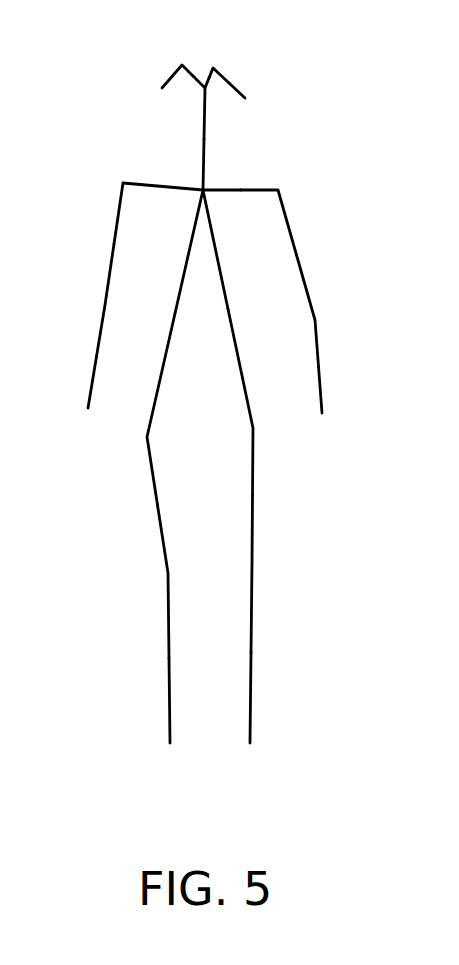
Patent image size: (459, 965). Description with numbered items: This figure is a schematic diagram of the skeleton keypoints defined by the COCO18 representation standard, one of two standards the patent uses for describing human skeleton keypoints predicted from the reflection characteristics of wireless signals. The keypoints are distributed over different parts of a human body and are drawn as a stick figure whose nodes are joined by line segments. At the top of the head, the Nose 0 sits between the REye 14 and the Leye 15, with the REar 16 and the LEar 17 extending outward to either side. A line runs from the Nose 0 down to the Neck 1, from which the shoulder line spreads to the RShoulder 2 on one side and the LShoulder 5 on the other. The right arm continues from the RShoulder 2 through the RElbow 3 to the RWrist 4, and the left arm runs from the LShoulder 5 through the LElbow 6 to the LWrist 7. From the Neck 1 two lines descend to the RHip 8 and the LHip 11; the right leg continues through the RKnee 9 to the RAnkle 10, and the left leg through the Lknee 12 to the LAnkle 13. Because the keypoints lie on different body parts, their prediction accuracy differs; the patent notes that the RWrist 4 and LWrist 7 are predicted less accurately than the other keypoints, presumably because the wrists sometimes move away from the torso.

The Nose 0 is at (195, 109).
The Neck 1 is at (202, 226).
The RShoulder 2 is at (124, 206).
The RElbow 3 is at (89, 300).
The RWrist 4 is at (77, 397).
The LShoulder 5 is at (274, 215).
The LElbow 6 is at (324, 311).
The LWrist 7 is at (337, 393).
The RHip 8 is at (144, 410).
The RKnee 9 is at (143, 581).
The RAnkle 10 is at (144, 708).
The LHip 11 is at (258, 402).
The Lknee 12 is at (277, 575).
The LAnkle 13 is at (277, 706).
The REye 14 is at (174, 46).
The Leye 15 is at (227, 50).
The REar 16 is at (145, 90).
The LEar 17 is at (264, 98).